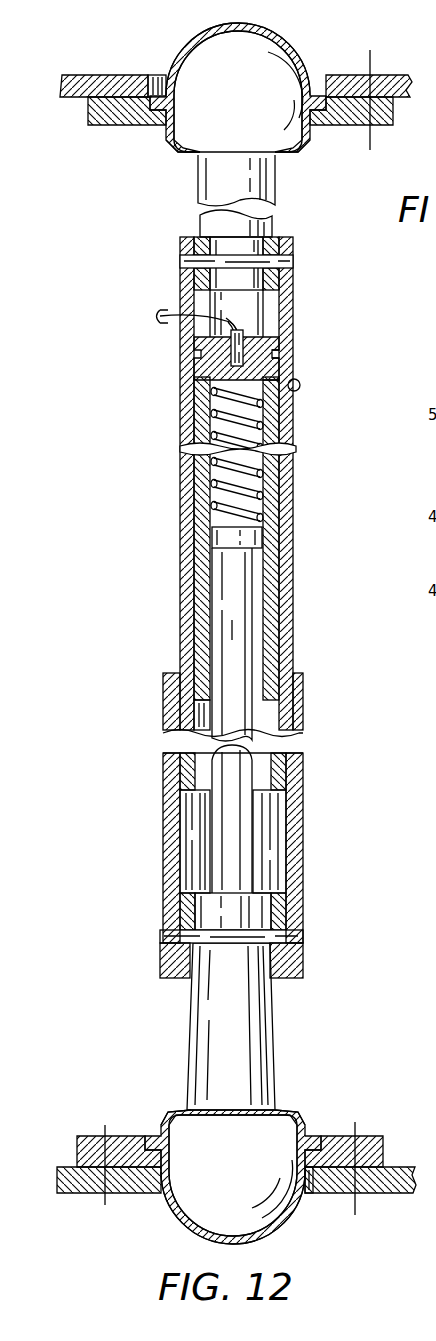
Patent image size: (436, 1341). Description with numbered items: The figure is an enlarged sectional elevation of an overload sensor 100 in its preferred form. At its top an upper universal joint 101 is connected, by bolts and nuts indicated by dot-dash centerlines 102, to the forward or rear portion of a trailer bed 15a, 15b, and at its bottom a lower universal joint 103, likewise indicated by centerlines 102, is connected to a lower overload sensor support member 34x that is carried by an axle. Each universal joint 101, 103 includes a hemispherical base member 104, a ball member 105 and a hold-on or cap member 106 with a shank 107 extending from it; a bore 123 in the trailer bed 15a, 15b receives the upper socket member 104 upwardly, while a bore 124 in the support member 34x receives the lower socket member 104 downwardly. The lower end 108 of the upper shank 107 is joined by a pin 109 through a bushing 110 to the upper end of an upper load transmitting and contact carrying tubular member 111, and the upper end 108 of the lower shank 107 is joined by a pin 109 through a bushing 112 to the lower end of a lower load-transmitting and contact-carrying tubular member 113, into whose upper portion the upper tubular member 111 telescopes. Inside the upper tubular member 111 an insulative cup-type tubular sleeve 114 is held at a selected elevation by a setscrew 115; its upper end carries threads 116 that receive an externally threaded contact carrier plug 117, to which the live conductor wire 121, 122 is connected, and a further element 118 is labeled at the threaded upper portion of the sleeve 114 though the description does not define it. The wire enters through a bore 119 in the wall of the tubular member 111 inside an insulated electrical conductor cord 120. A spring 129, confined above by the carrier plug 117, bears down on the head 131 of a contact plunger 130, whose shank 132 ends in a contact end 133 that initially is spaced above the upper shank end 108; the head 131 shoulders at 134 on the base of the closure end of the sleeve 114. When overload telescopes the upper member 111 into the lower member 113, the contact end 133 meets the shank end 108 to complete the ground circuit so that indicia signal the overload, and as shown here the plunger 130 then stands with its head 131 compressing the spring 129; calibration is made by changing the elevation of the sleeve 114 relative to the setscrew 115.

The trailer bed forward portion 15a is at (94, 75).
The trailer bed rear portion 15b is at (113, 150).
The lower overload sensor support member 34x is at (84, 1195).
The overload sensor 100 is at (313, 574).
The upper universal joint 101 is at (304, 42).
The dot-dash centerlines 102 is at (372, 66).
The lower universal joint 103 is at (164, 1221).
The hemispherical base member 104 is at (194, 38).
The ball member 105 is at (253, 104).
The cap member 106 is at (165, 148).
The shank 107 is at (277, 187).
The shank end 108 is at (222, 280).
The pin 109 is at (281, 262).
The bushing 110 is at (282, 281).
The upper load transmitting and contact carrying tubular member 111 is at (296, 340).
The bushing 112 is at (280, 958).
The lower load-transmitting and contact-carrying tubular member 113 is at (303, 825).
The insulative tubular sleeve 114 is at (272, 482).
The setscrew 115 is at (300, 386).
The threads 116 is at (268, 360).
The contact carrier plug 117 is at (258, 336).
The threaded block 118 is at (212, 362).
The bore 119 is at (196, 300).
The insulated electrical conductor cord 120 is at (158, 322).
The live conductor wire 121 is at (205, 330).
The live conductor wire 122 is at (225, 325).
The bore 123 is at (148, 78).
The bore 124 is at (312, 1178).
The spring 129 is at (262, 420).
The contact plunger 130 is at (258, 618).
The plunger head 131 is at (258, 537).
The plunger shank 132 is at (255, 765).
The contact end 133 is at (252, 868).
The shoulder 134 is at (262, 683).